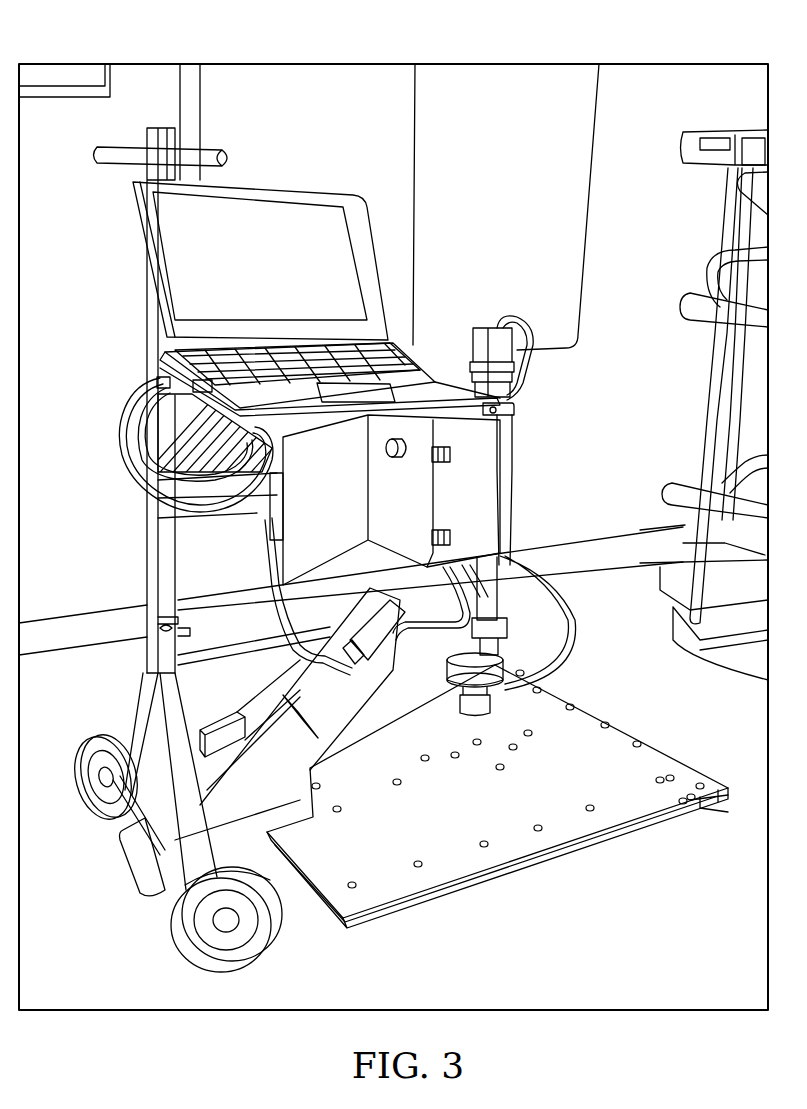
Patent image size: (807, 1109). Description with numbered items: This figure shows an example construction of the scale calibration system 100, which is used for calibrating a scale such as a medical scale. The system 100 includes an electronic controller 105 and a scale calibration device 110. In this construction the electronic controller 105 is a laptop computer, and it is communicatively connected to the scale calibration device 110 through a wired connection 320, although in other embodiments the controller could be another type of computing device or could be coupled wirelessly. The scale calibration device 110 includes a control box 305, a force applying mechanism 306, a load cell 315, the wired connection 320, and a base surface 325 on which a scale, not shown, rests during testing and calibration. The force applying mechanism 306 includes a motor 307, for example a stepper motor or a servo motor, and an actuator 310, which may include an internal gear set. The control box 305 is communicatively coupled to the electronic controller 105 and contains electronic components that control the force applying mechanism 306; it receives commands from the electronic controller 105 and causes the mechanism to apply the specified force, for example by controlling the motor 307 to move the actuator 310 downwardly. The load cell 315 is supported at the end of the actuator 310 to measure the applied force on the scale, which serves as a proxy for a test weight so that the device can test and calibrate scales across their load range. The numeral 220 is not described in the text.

The scale calibration system 100 is at (312, 63).
The scale calibration device 110 is at (147, 540).
The computing device (laptop) 220 is at (340, 248).
The electronic controller 105 is at (405, 330).
The motor 307 is at (498, 327).
The actuator 310 is at (512, 412).
The control box 305 is at (472, 465).
The wired connection 320 is at (277, 500).
The load cell 315 is at (465, 687).
The base surface 325 is at (635, 745).
The force applying mechanism 306 is at (650, 372).